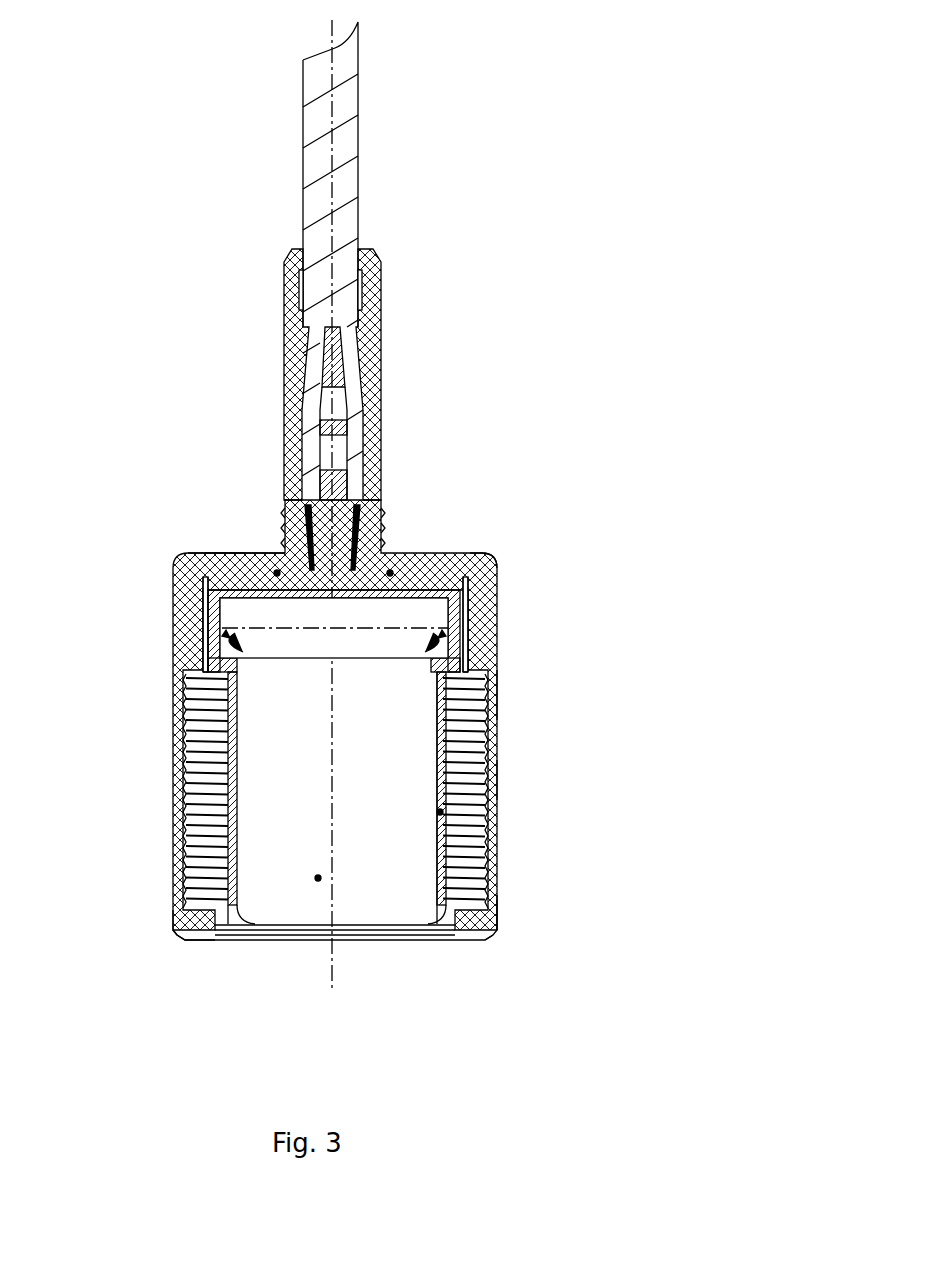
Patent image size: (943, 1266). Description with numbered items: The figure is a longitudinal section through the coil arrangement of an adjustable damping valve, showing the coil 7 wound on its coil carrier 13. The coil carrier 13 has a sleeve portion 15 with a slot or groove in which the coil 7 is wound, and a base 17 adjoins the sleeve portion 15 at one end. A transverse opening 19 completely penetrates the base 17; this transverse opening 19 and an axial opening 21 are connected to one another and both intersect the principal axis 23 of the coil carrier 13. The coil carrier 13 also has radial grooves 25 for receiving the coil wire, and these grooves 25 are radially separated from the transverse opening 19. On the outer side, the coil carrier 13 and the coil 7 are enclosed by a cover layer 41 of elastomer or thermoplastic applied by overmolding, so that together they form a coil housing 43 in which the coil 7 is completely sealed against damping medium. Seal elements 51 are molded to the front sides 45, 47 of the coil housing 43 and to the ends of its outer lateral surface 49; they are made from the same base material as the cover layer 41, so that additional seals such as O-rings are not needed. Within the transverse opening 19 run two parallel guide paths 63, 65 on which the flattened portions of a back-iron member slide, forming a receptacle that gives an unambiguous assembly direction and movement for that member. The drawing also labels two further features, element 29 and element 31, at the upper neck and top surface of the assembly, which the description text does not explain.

The coil 7 is at (465, 830).
The coil carrier 13 is at (440, 812).
The sleeve portion 15 is at (237, 662).
The base 17 is at (415, 607).
The transverse opening 19 is at (498, 557).
The axial opening 21 is at (318, 878).
The principal axis 23 is at (340, 740).
The radial grooves 25 is at (200, 607).
The cable sleeve 29 is at (432, 553).
The cap top surface 31 is at (210, 553).
The cover layer 41 is at (497, 692).
The coil housing 43 is at (536, 913).
The front side 45 is at (220, 553).
The front side 47 is at (220, 935).
The outer lateral surface 49 is at (497, 782).
The seal elements 51 is at (492, 553).
The guide path 63 is at (203, 662).
The guide path 65 is at (452, 632).